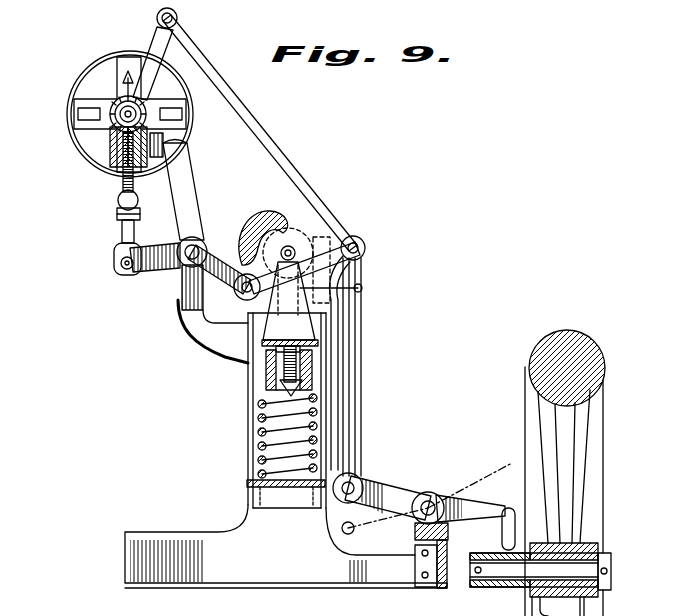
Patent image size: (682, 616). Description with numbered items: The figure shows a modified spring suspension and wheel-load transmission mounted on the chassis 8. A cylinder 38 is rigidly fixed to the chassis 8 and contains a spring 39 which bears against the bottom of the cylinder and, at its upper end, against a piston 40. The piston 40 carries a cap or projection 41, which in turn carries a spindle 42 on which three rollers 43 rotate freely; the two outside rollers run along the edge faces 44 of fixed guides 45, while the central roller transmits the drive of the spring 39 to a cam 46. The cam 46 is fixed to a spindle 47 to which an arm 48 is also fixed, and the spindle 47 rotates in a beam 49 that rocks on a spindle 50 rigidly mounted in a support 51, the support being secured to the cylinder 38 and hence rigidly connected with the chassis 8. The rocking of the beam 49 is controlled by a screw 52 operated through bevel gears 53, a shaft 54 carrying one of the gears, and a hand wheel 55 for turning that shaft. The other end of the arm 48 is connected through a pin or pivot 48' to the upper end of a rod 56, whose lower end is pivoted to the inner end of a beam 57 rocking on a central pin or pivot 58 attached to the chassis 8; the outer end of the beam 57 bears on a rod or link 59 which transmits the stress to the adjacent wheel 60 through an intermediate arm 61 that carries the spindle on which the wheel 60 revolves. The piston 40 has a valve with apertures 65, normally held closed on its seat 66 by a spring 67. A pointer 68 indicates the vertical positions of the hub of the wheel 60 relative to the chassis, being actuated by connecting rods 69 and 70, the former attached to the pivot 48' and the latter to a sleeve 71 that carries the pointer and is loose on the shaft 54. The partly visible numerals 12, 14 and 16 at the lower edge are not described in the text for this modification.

The chassis 8 is at (155, 553).
The frame part 12 is at (295, 608).
The frame part 14 is at (350, 608).
The frame part 16 is at (250, 608).
The cylinder 38 is at (247, 472).
The spring 39 is at (253, 453).
The piston 40 is at (246, 375).
The cap or projection 41 is at (227, 332).
The spindle 42 is at (250, 268).
The rollers 43 is at (305, 215).
The edge faces 44 is at (366, 248).
The fixed guides 45 is at (366, 252).
The cam 46 is at (276, 218).
The spindle 47 is at (243, 307).
The arm 48 is at (371, 363).
The pin or pivot 48' is at (360, 296).
The beam 49 is at (215, 247).
The spindle 50 is at (180, 243).
The support 51 is at (182, 302).
The screw 52 is at (122, 190).
The bevel gears 53 is at (148, 127).
The shaft 54 is at (130, 114).
The hand wheel 55 is at (185, 146).
The rod 56 is at (352, 424).
The beam 57 is at (372, 486).
The central pin or pivot 58 is at (432, 500).
The rod or link 59 is at (512, 532).
The wheel 60 is at (530, 372).
The intermediate arm 61 is at (512, 587).
The apertures 65 is at (253, 412).
The seat 66 is at (310, 342).
The spring 67 is at (250, 383).
The pointer 68 is at (125, 89).
The connecting rod 69 is at (262, 128).
The connecting rod 70 is at (150, 42).
The sleeve 71 is at (130, 114).